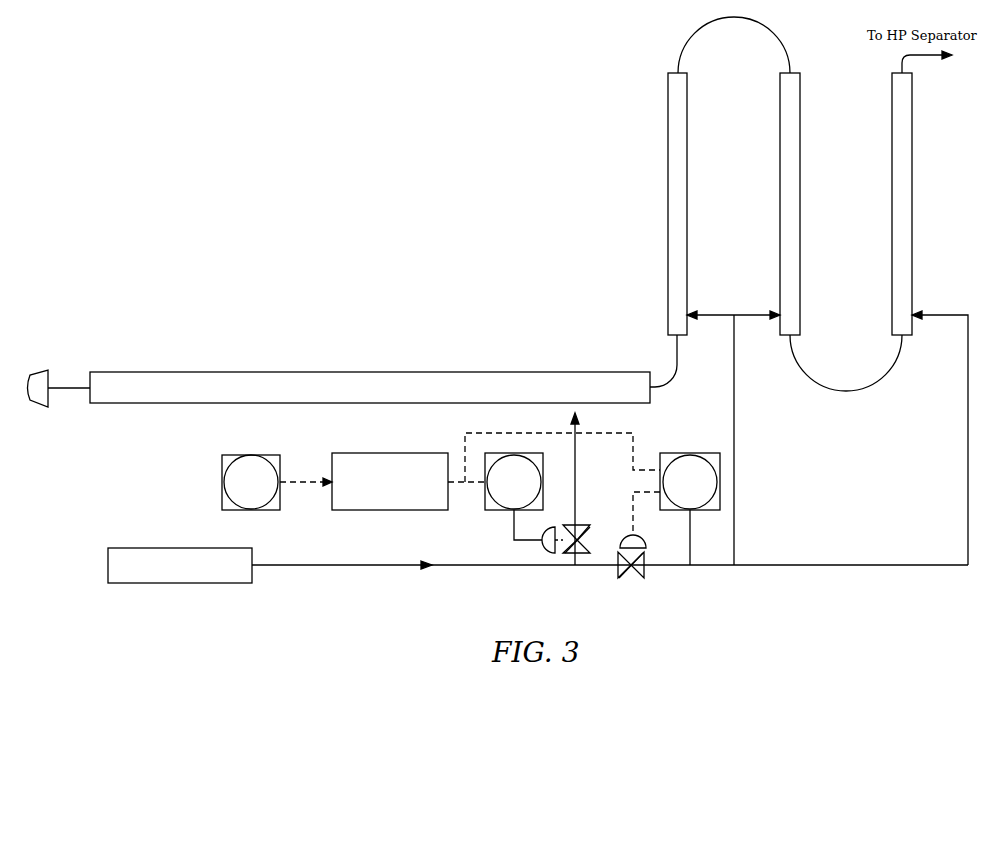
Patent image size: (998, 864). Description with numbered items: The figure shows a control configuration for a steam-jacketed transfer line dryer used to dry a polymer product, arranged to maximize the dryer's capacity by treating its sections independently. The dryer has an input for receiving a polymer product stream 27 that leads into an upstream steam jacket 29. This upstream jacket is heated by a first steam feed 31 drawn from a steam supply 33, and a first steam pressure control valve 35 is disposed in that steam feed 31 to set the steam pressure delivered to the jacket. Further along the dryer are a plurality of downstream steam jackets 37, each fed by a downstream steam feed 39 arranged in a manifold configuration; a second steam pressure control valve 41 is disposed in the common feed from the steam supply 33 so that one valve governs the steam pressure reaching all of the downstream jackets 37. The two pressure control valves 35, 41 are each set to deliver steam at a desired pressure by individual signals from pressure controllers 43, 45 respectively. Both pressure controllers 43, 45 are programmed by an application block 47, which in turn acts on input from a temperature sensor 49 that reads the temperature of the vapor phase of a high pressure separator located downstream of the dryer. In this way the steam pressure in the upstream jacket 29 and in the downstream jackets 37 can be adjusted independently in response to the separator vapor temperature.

The input for receiving a polymer product stream 27 is at (36, 377).
The upstream steam jacket 29 is at (372, 372).
The first steam feed 31 is at (580, 485).
The steam supply 33 is at (216, 548).
The first steam pressure control valve 35 is at (548, 556).
The downstream steam jackets 37 is at (667, 203).
The downstream steam feed 39 is at (752, 313).
The second steam pressure control valve 41 is at (645, 572).
The pressure controller 43 is at (500, 511).
The pressure controller 45 is at (682, 452).
The application block 47 is at (393, 512).
The temperature sensor 49 is at (220, 484).